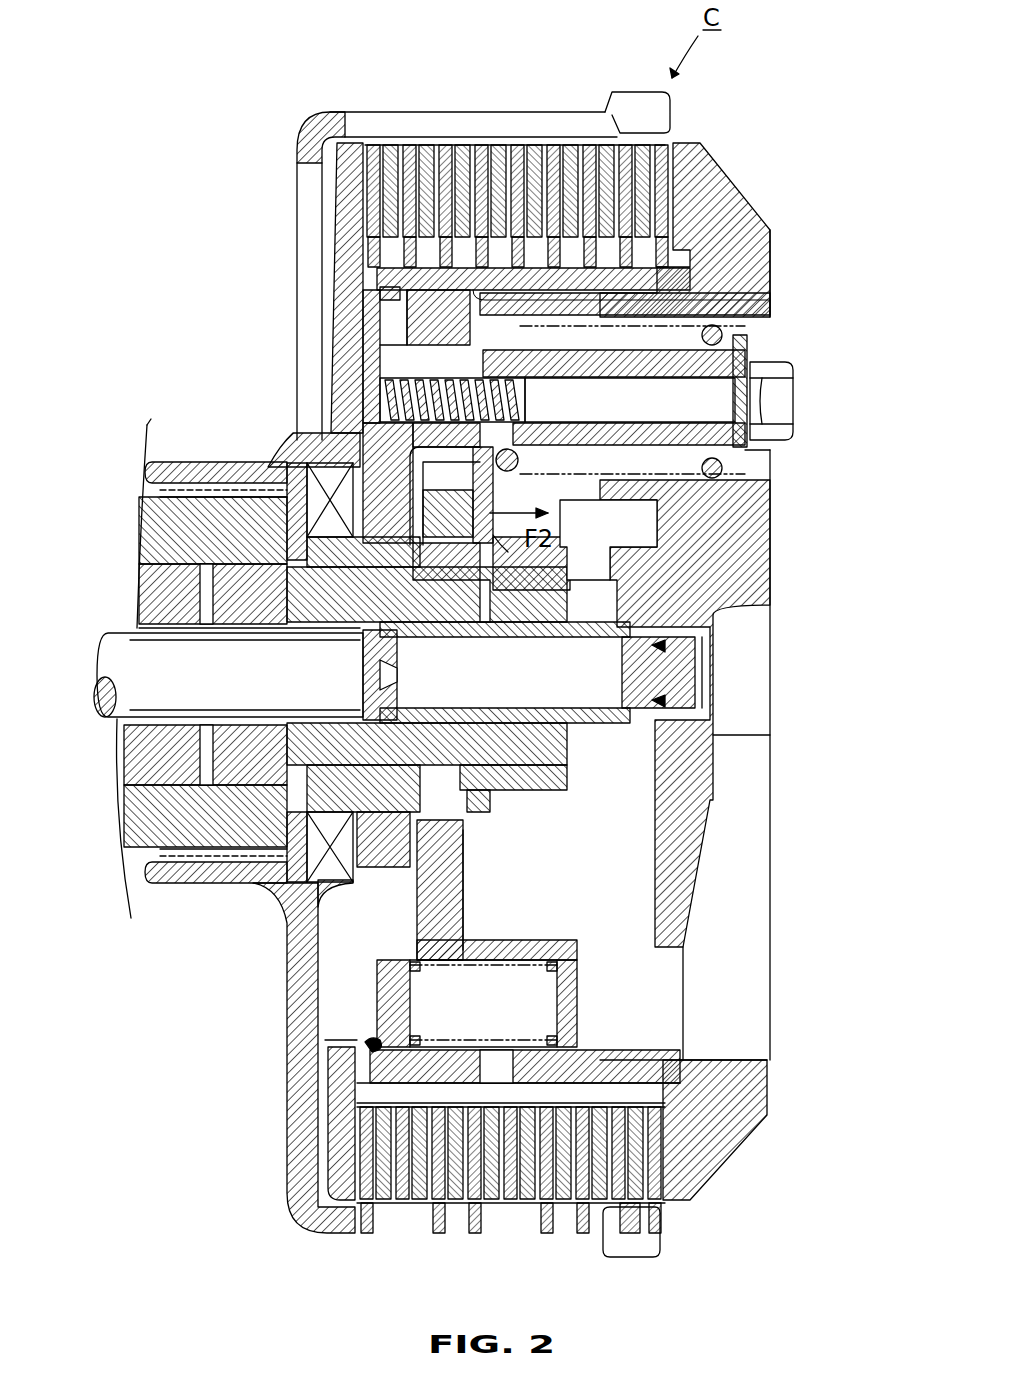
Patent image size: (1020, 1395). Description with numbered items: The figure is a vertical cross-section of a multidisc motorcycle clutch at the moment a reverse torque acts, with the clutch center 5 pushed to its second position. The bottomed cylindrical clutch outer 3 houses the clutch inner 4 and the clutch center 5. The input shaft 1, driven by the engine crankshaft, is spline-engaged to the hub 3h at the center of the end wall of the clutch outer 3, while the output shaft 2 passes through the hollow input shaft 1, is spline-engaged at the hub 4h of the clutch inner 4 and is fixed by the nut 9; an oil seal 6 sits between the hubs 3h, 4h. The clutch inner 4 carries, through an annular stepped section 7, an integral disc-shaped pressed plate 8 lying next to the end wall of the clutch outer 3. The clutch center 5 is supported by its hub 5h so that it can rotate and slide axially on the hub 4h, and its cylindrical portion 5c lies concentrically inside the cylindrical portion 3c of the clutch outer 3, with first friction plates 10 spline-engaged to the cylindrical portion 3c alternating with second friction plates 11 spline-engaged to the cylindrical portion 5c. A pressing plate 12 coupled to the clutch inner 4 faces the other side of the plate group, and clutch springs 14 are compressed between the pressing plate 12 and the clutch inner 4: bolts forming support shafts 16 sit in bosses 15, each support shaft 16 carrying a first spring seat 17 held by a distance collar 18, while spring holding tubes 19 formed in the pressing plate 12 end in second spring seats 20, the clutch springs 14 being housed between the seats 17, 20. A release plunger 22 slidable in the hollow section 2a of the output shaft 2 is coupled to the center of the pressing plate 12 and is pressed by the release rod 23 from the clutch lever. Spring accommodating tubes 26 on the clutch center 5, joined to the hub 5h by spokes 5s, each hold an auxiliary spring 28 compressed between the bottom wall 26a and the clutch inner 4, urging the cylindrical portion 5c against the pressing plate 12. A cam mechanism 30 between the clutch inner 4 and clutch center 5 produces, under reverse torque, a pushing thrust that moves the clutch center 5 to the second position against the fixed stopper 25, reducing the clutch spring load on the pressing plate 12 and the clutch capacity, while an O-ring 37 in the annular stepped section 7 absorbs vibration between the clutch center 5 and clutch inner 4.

The input shaft 1 is at (152, 528).
The output shaft 2 is at (150, 592).
The hollow section 2a is at (117, 720).
The clutch outer 3 is at (310, 112).
The cylindrical portion 3c is at (505, 120).
The hub 3h is at (210, 468).
The clutch inner 4 is at (293, 432).
The hub 4h is at (327, 555).
The clutch center 5 is at (465, 891).
The cylindrical portion 5c is at (565, 1060).
The hub 5h is at (486, 814).
The spokes 5s is at (465, 910).
The oil seal 6 is at (290, 897).
The annular stepped section 7 is at (345, 1080).
The pressed plate 8 is at (330, 258).
The nut 9 is at (545, 548).
The first friction plates 10 is at (470, 145).
The second friction plates 11 is at (622, 145).
The pressing plate 12 is at (720, 195).
The clutch springs 14 is at (745, 290).
The bosses 15 is at (512, 440).
The support shafts 16 is at (780, 405).
The first spring seat 17 is at (433, 494).
The distance collar 18 is at (722, 335).
The spring holding tubes 19 is at (605, 470).
The second spring seat 20 is at (722, 468).
The release plunger 22 is at (555, 625).
The release rod 23 is at (117, 666).
The fixed stopper 25 is at (493, 625).
The spring accommodating tubes 26 is at (530, 945).
The bottom wall 26a is at (585, 968).
The auxiliary springs 28 is at (420, 968).
The cam mechanism 30 is at (378, 320).
The O-ring 37 is at (365, 1045).